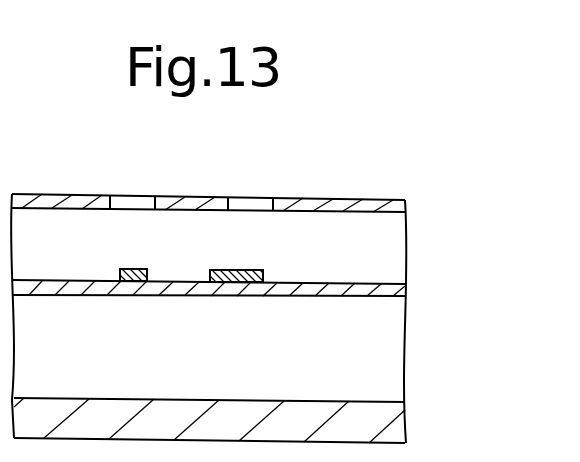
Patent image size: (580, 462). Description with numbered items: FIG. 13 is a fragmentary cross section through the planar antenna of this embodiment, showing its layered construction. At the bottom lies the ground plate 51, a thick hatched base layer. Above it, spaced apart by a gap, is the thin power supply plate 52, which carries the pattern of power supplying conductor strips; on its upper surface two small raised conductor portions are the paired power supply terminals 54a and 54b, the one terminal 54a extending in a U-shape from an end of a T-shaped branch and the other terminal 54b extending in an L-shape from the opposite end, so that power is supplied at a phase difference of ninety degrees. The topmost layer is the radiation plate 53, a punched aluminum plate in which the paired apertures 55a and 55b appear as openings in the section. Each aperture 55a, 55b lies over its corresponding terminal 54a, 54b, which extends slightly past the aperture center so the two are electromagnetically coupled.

The ground plate 51 is at (385, 428).
The power supply plate 52 is at (387, 292).
The radiation plate 53 is at (387, 201).
The power supply terminal 54a is at (128, 283).
The power supply terminal 54b is at (237, 284).
The aperture 55a is at (135, 201).
The aperture 55b is at (255, 201).